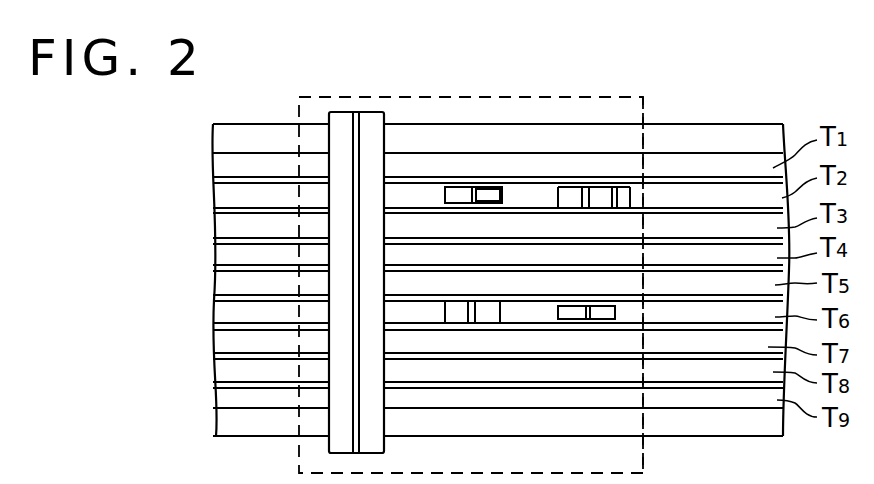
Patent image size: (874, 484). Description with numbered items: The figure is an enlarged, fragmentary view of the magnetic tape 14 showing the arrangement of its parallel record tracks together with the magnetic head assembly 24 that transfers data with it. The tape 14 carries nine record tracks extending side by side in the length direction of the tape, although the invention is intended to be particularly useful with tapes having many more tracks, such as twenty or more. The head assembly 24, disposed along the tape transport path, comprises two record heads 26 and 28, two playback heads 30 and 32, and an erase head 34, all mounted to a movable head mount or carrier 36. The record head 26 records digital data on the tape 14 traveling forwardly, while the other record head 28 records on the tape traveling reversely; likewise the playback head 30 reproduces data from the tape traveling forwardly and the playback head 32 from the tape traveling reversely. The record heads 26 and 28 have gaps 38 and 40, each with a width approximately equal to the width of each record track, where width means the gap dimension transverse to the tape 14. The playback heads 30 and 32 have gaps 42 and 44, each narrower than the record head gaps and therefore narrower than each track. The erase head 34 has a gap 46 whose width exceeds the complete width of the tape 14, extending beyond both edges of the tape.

The magnetic tape 14 is at (737, 124).
The magnetic head assembly 24 is at (522, 84).
The record head 26 is at (485, 323).
The record head 28 is at (573, 193).
The playback head 30 is at (603, 320).
The playback head 32 is at (455, 192).
The erase head 34 is at (336, 113).
The head carrier 36 is at (652, 115).
The gap 38 is at (470, 323).
The gap 40 is at (594, 194).
The gap 42 is at (587, 320).
The gap 44 is at (482, 192).
The gap 46 is at (357, 113).